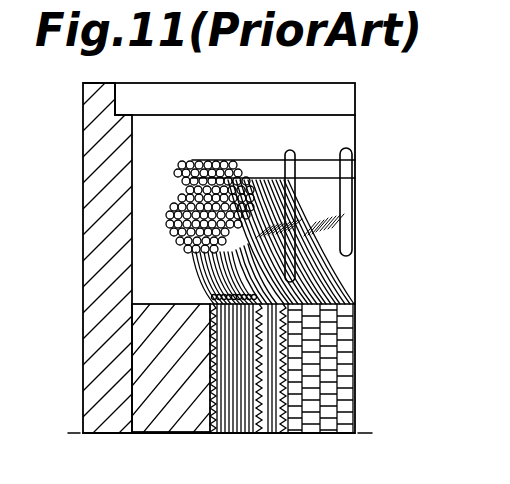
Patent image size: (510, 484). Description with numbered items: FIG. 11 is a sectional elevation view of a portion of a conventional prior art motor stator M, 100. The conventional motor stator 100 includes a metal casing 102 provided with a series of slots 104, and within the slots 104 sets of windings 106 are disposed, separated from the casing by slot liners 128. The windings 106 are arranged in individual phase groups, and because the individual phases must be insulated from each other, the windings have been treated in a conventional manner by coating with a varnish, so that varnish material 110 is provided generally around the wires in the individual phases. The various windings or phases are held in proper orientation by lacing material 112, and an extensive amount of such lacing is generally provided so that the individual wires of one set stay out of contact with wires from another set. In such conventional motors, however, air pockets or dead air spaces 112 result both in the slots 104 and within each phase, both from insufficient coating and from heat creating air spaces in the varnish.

The motor stator M is at (102, 123).
The conventional motor stator 100 is at (153, 426).
The metal casing 102 is at (151, 325).
The slots 104 is at (292, 432).
The sets of windings 106 is at (170, 232).
The varnish material 110 is at (217, 160).
The lacing material 112 is at (294, 158).
The slot liners 128 is at (259, 449).